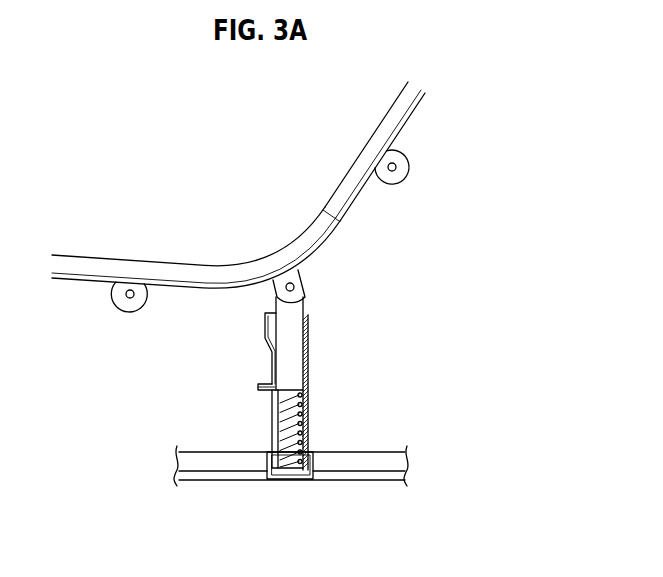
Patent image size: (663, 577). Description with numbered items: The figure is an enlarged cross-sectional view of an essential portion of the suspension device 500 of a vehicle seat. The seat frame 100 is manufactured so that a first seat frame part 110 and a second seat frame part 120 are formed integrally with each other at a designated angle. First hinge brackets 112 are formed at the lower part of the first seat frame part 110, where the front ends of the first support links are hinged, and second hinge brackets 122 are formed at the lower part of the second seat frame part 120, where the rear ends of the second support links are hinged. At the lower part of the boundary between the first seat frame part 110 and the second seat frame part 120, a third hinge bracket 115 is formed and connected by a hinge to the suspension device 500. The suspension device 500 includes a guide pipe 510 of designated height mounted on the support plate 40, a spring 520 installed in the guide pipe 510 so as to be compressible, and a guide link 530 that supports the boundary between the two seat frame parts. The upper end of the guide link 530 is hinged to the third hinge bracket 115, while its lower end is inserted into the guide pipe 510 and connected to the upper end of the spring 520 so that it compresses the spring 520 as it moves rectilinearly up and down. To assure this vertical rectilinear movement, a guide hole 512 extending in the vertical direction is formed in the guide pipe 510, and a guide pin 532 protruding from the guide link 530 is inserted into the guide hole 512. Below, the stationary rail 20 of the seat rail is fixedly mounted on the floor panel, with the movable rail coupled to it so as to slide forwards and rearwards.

The seat frame 100 is at (256, 226).
The first seat frame part 110 is at (147, 266).
The second seat frame part 120 is at (367, 158).
The first hinge brackets 112 is at (130, 306).
The second hinge brackets 122 is at (393, 178).
The third hinge bracket 115 is at (301, 272).
The suspension device 500 is at (299, 427).
The guide pipe 510 is at (308, 415).
The guide hole 512 is at (268, 350).
The spring 520 is at (293, 476).
The guide link 530 is at (308, 340).
The guide pin 532 is at (258, 388).
The support plate 40 is at (270, 472).
The stationary rail 20 is at (365, 481).